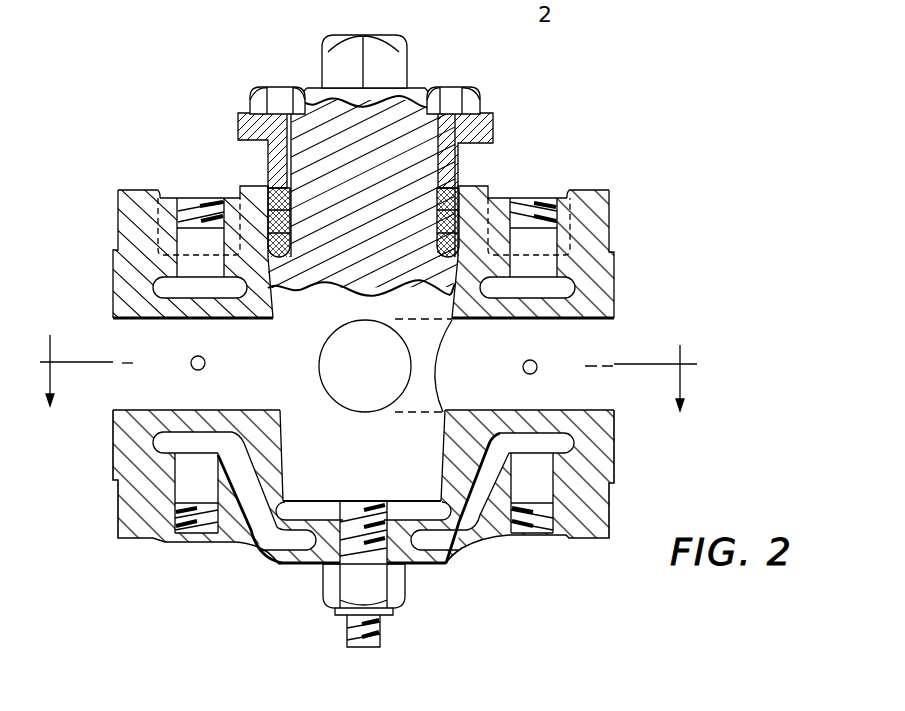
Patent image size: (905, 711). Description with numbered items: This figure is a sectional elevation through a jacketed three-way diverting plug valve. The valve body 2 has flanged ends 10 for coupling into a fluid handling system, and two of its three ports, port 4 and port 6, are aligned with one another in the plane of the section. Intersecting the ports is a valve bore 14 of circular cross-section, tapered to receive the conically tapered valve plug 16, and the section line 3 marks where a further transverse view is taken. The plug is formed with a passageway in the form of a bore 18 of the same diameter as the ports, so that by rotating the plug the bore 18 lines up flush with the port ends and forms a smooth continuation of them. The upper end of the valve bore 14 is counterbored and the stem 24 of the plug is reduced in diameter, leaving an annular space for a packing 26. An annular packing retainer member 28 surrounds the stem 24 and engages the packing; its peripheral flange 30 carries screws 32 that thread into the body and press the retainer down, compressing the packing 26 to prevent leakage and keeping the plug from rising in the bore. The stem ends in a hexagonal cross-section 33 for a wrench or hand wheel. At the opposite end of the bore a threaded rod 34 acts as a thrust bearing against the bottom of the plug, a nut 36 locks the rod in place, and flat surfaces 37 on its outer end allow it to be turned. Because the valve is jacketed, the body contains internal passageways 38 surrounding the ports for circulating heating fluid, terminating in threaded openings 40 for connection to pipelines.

The valve body 2 is at (333, 330).
The section line 3- 3 is at (364, 373).
The port 4 is at (162, 410).
The port 6 is at (577, 410).
The flanged end 10 is at (118, 218).
The valve bore 14 is at (272, 320).
The valve plug 16 is at (372, 478).
The bore 18 is at (398, 348).
The stem 24 is at (397, 120).
The packing 26 is at (458, 188).
The packing retainer member 28 is at (268, 170).
The peripheral flange 30 is at (494, 123).
The screws 32 is at (273, 86).
The hexagonal cross-section 33 is at (336, 50).
The threaded rod 34 is at (393, 615).
The nut 36 is at (331, 583).
The flat surfaces 37 is at (348, 633).
The internal passageways 38 is at (172, 288).
The openings 40 is at (192, 199).